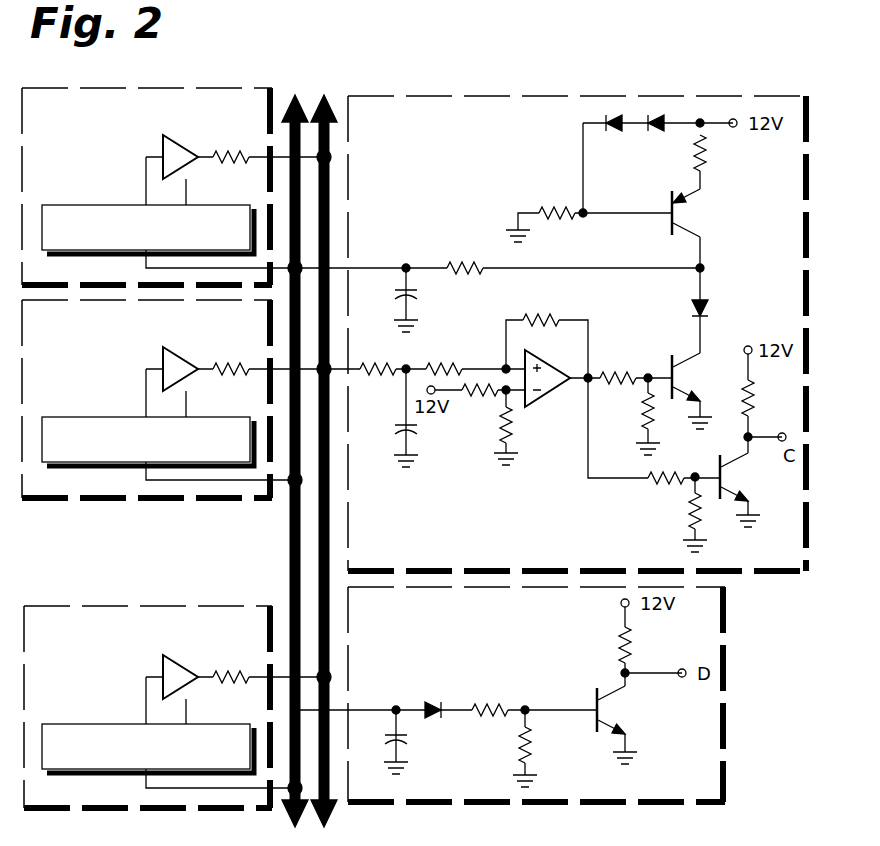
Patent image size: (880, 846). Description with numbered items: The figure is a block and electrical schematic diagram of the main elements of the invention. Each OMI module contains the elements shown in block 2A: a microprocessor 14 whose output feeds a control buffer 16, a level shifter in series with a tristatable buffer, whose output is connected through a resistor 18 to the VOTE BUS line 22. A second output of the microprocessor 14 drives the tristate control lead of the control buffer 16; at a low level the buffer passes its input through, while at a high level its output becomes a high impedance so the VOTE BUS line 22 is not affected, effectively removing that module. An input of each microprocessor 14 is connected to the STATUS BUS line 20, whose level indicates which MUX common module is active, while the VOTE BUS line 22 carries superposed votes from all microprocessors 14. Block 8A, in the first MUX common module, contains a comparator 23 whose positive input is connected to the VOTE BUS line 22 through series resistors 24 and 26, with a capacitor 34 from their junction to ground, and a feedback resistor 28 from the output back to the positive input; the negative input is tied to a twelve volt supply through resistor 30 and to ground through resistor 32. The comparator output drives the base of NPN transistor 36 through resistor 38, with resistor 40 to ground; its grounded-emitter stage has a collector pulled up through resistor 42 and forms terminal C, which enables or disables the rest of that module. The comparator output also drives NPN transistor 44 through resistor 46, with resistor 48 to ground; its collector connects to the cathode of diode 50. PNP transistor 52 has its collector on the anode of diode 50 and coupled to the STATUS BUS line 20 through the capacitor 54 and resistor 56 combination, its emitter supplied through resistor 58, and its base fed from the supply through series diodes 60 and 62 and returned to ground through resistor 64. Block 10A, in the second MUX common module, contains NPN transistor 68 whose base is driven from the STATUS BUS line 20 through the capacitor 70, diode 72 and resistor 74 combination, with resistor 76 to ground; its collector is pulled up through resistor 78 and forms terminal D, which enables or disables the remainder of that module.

The block 2A is at (120, 88).
The block 8A is at (745, 96).
The block 10A is at (727, 712).
The microprocessor 14 is at (105, 205).
The control buffer 16 is at (167, 137).
The resistor 18 is at (232, 164).
The STATUS BUS line 20 is at (294, 95).
The VOTE BUS line 22 is at (324, 95).
The comparator 23 is at (548, 399).
The resistor 24 is at (378, 363).
The resistor 26 is at (446, 363).
The feedback resistor 28 is at (542, 318).
The resistor 30 is at (480, 394).
The resistor 32 is at (512, 436).
The capacitor 34 is at (394, 431).
The NPN transistor 36 is at (749, 477).
The resistor 38 is at (660, 485).
The resistor 40 is at (690, 527).
The resistor 42 is at (754, 396).
The NPN transistor 44 is at (697, 377).
The resistor 46 is at (620, 373).
The resistor 48 is at (642, 410).
The diode 50 is at (713, 310).
The PNP transistor 52 is at (702, 211).
The capacitor 54 is at (420, 297).
The resistor 56 is at (465, 262).
The resistor 58 is at (707, 159).
The diode 60 is at (657, 132).
The diode 62 is at (614, 132).
The resistor 64 is at (549, 208).
The NPN transistor 68 is at (622, 709).
The capacitor 70 is at (408, 743).
The diode 72 is at (432, 703).
The resistor 74 is at (491, 703).
The resistor 76 is at (518, 745).
The resistor 78 is at (619, 647).